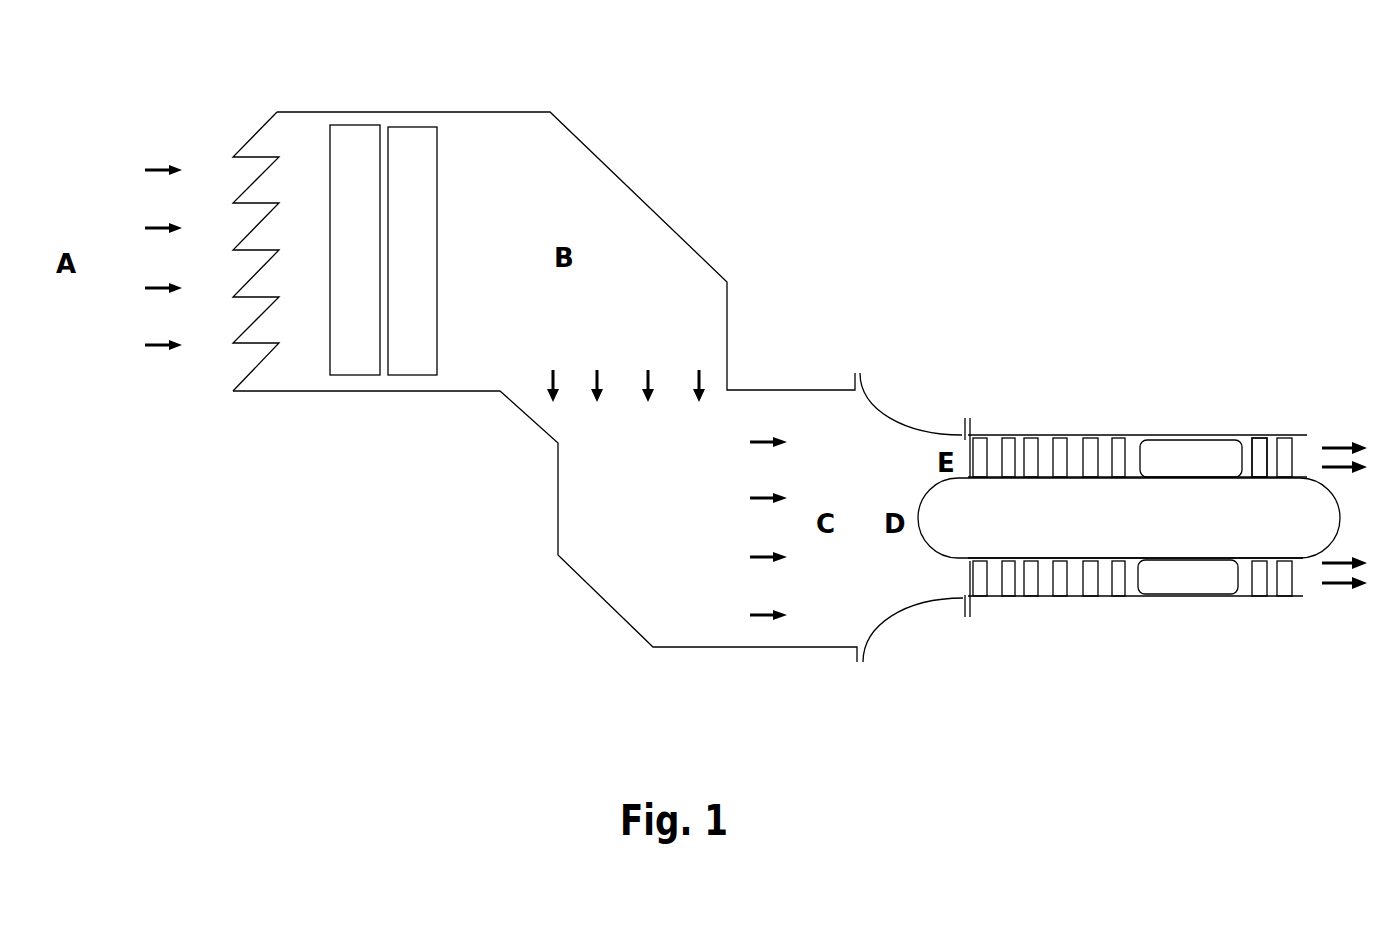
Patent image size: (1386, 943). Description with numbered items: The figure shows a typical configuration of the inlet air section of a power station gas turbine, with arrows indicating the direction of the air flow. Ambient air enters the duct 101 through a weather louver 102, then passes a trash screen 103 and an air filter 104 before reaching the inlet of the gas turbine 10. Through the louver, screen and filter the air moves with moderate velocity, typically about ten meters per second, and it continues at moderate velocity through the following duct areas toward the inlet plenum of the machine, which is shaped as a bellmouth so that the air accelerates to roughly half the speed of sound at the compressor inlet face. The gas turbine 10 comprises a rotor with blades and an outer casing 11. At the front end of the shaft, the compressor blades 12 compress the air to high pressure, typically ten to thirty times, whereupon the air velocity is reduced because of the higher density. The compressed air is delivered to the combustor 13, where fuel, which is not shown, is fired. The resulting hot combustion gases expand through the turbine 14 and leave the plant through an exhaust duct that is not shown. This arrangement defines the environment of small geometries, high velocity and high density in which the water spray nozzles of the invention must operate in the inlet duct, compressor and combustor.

The gas turbine 10 is at (1030, 540).
The outer casing 11 is at (1077, 432).
The compressor blades 12 is at (1090, 580).
The combustor 13 is at (1178, 443).
The turbine 14 is at (1260, 450).
The duct 101 is at (705, 255).
The weather louver 102 is at (272, 133).
The trash screen 103 is at (348, 147).
The air filter 104 is at (415, 138).